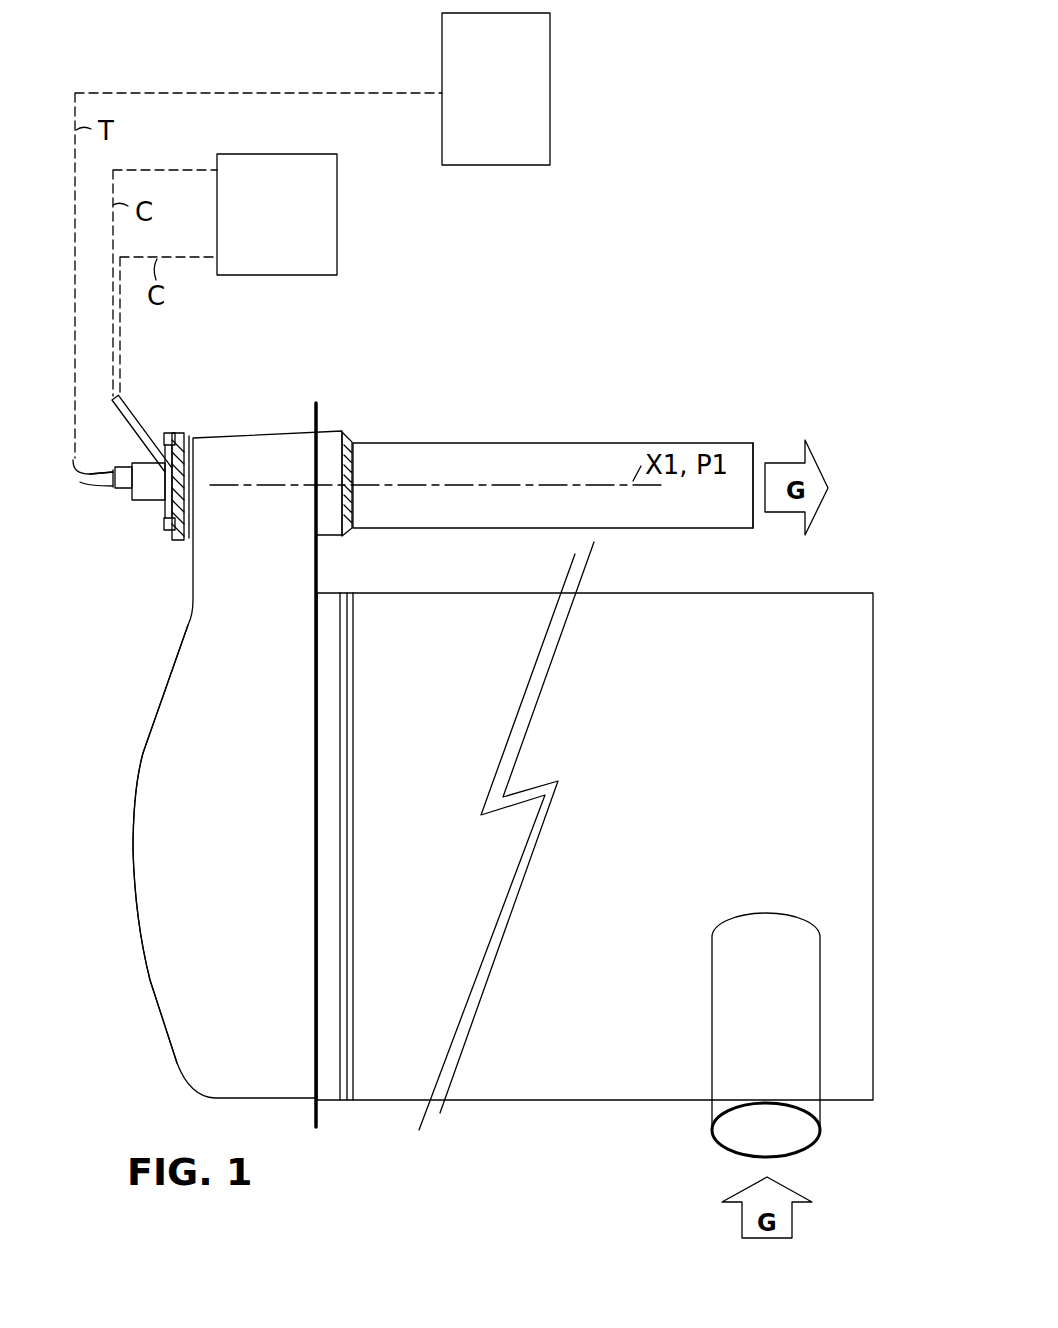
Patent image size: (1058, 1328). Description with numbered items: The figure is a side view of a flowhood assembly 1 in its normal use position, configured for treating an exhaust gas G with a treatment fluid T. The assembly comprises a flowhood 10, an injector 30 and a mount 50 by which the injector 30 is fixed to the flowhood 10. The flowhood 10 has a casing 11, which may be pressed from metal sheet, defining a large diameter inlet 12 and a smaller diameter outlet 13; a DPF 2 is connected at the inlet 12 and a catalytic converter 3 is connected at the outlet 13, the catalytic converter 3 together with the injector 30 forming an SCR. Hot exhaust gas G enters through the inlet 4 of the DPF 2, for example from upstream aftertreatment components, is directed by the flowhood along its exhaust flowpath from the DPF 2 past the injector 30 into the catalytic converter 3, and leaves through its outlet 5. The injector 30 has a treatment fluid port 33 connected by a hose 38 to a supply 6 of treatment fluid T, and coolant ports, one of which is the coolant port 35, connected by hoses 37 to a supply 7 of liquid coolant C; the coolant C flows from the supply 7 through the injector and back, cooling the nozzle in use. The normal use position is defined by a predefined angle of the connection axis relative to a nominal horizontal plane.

The flowhood assembly 1 is at (741, 102).
The DPF 2 is at (588, 1098).
The catalytic converter 3 is at (541, 447).
The inlet 4 is at (806, 1145).
The outlet 5 is at (756, 444).
The supply 6 is at (493, 124).
The supply 7 is at (265, 243).
The flowhood 10 is at (167, 673).
The casing 11 is at (145, 752).
The large diameter inlet 12 is at (340, 1100).
The smaller diameter outlet 13 is at (347, 436).
The injector 30 is at (145, 487).
The treatment fluid port 33 is at (106, 486).
The coolant port 35 is at (148, 450).
The hoses 37 is at (121, 398).
The hose 38 is at (103, 474).
The mount 50 is at (177, 431).